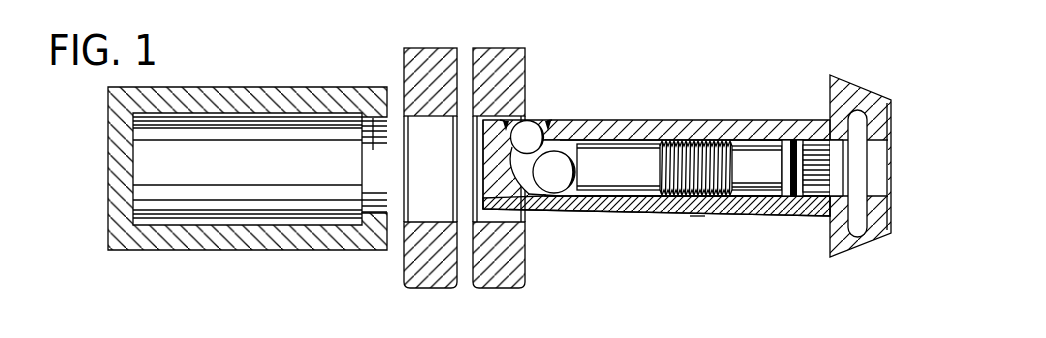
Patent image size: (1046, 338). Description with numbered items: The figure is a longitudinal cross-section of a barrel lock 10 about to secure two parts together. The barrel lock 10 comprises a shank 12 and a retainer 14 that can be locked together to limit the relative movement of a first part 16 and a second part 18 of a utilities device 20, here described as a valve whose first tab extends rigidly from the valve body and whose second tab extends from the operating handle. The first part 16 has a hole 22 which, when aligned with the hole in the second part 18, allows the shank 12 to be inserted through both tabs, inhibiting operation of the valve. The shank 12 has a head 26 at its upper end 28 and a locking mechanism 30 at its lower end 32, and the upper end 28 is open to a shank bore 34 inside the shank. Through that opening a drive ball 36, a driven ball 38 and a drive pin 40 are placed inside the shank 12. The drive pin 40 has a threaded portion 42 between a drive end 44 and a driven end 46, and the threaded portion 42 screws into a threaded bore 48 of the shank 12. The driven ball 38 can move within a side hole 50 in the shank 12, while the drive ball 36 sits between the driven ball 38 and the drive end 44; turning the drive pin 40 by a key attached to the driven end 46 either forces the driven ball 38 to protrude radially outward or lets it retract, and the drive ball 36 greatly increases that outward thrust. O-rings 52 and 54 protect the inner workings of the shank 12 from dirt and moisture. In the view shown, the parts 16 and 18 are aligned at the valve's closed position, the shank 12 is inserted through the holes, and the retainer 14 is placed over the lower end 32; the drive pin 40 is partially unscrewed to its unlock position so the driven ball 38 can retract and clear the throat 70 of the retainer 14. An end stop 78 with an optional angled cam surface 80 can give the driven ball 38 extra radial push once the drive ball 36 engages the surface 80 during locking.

The barrel lock 10 is at (693, 71).
The shank 12 is at (697, 216).
The retainer 14 is at (248, 253).
The first part 16 is at (404, 262).
The second part 18 is at (503, 290).
The utilities device 20 is at (555, 277).
The hole 22 is at (417, 220).
The head 26 is at (853, 249).
The upper end 28 is at (805, 262).
The locking mechanism 30 is at (594, 148).
The lower end 32 is at (481, 195).
The shank bore 34 is at (767, 142).
The drive ball 36 is at (552, 163).
The driven ball 38 is at (527, 138).
The drive pin 40 is at (736, 155).
The threaded portion 42 is at (660, 167).
The drive end 44 is at (576, 195).
The driven end 46 is at (838, 168).
The threaded bore 48 is at (638, 180).
The side hole 50 is at (542, 120).
The O-ring 52 is at (510, 130).
The O-ring 54 is at (795, 140).
The throat 70 is at (376, 122).
The end stop 78 is at (513, 160).
The angled cam surface 80 is at (520, 178).